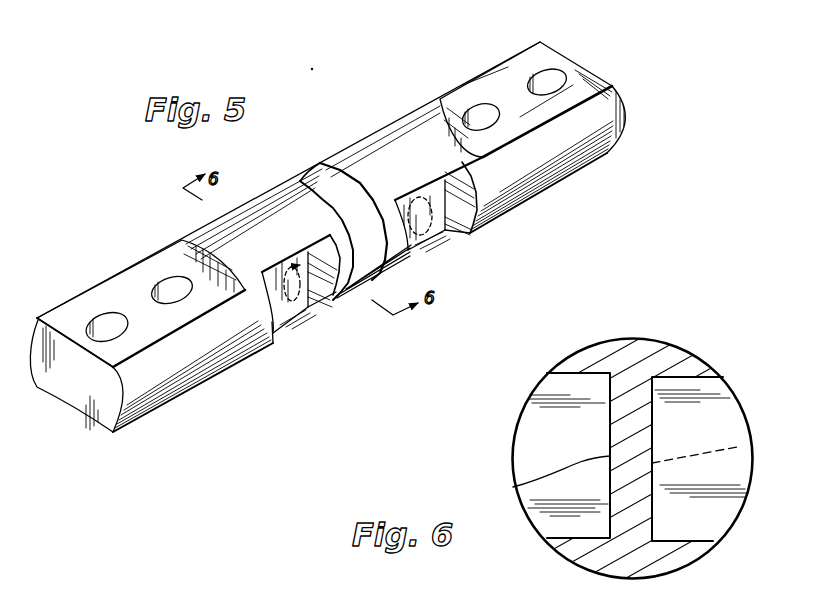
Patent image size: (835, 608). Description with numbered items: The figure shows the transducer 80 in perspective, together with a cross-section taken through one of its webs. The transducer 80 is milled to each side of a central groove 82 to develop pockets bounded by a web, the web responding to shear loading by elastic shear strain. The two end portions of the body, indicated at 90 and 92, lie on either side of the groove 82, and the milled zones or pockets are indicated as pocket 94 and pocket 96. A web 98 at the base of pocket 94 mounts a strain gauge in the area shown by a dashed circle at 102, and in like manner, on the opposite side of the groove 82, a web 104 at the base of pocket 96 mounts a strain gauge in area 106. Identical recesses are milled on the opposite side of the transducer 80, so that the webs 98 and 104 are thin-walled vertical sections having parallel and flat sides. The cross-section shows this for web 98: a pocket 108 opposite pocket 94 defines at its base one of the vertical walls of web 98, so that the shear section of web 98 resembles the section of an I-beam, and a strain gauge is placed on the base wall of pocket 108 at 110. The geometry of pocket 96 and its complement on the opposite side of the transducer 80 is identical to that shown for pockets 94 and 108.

In FIG. 5, the transducer 80 is at (356, 130).
In FIG. 5, the groove 82 is at (297, 177).
In FIG. 5, the first end block 90 is at (110, 293).
In FIG. 5, the second end block 92 is at (540, 53).
In FIG. 5, the pocket 94 is at (280, 337).
In FIG. 5, the pocket 96 is at (415, 257).
In FIG. 5, the web 98 is at (335, 305).
In FIG. 6, the web 98 is at (647, 399).
In FIG. 5, the strain gauge area 102 is at (283, 331).
In FIG. 6, the strain gauge area 102 is at (740, 447).
In FIG. 5, the web 104 is at (470, 233).
In FIG. 6, the web 104 is at (720, 502).
In FIG. 5, the strain gauge area 106 is at (452, 253).
In FIG. 6, the pocket 108 is at (538, 415).
In FIG. 6, the strain gauge location 110 is at (513, 487).